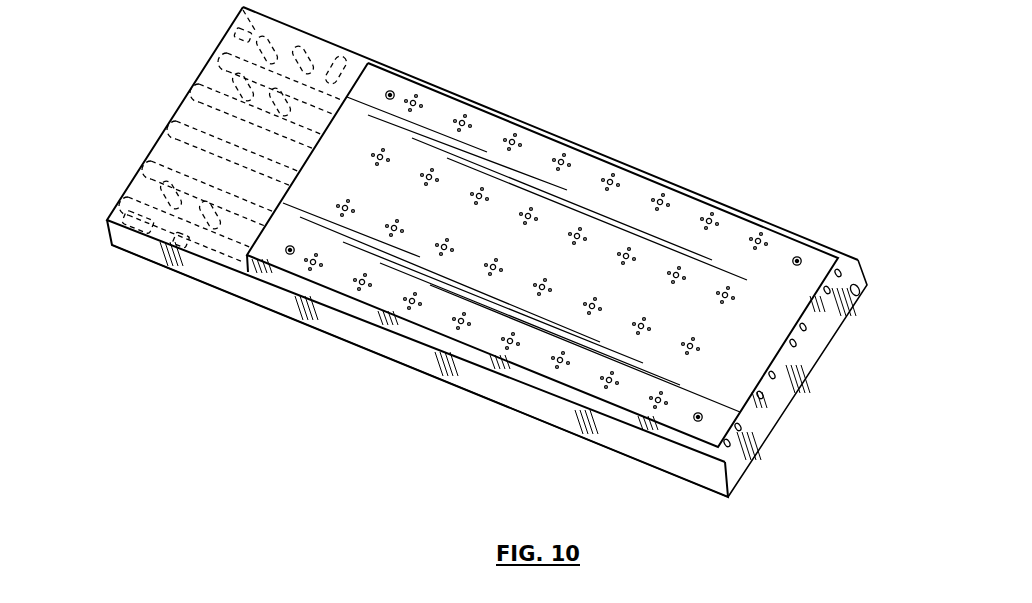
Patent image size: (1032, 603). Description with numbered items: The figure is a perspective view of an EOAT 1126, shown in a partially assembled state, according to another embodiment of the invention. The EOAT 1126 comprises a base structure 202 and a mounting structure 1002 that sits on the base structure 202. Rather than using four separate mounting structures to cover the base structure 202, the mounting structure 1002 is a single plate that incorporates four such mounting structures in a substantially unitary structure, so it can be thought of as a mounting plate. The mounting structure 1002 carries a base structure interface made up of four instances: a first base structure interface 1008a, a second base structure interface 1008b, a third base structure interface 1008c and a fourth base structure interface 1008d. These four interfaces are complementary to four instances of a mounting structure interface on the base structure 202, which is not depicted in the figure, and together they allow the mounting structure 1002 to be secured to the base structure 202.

The base structure 202 is at (148, 270).
The EOAT 1126 is at (745, 112).
The mounting structure 1002 is at (852, 258).
The first base structure interface 1008a is at (695, 421).
The second base structure interface 1008b is at (290, 254).
The third base structure interface 1008c is at (392, 92).
The fourth base structure interface 1008d is at (801, 263).